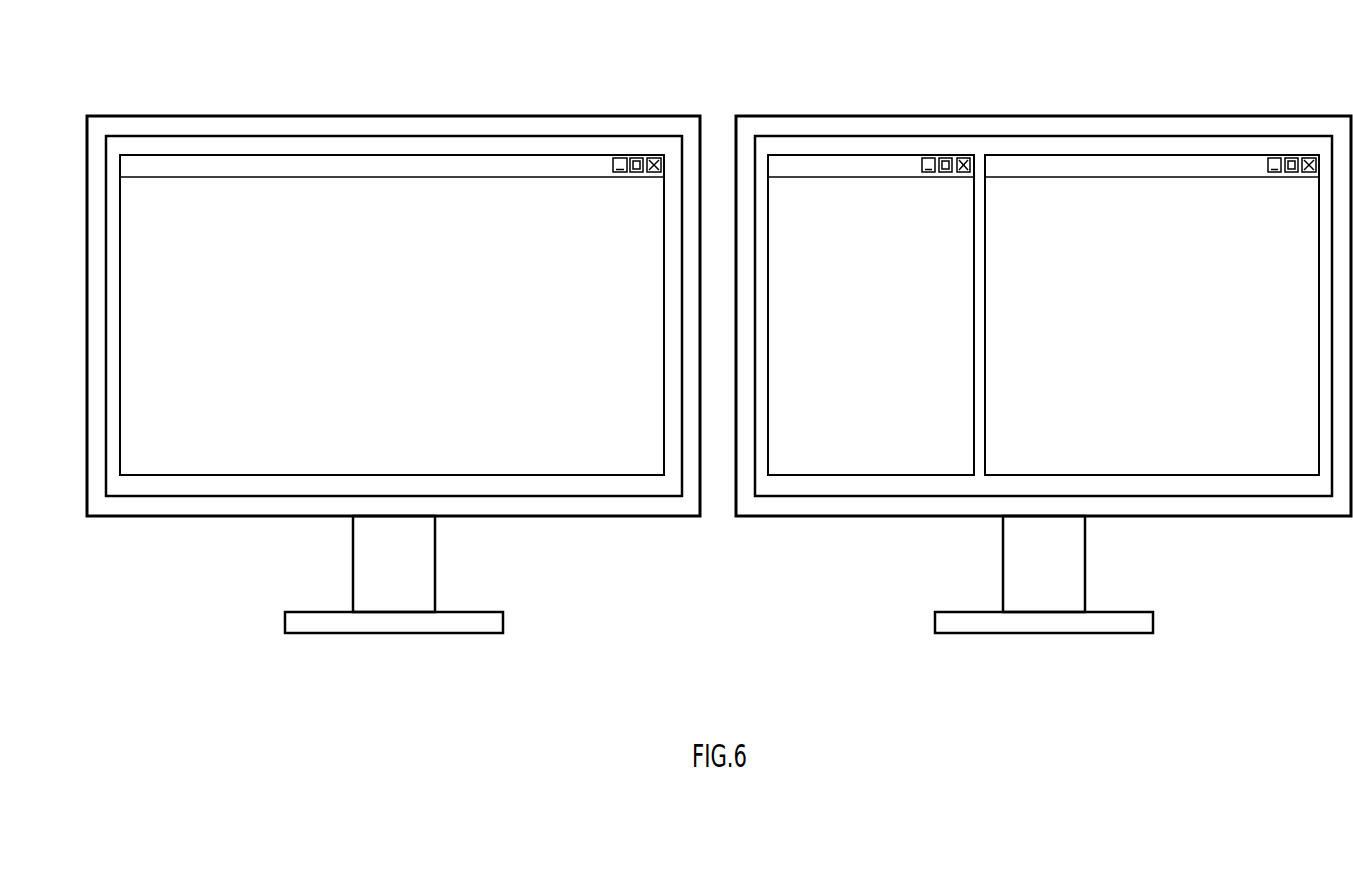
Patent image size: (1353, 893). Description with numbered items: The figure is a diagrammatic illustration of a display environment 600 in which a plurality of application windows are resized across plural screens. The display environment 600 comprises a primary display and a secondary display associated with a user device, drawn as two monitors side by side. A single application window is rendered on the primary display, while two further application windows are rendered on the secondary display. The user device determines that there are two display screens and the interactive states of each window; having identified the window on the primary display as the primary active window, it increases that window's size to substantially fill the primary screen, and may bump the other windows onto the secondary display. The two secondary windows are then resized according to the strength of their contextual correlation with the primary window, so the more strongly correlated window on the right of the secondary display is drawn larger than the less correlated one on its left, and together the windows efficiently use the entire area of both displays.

The display environment 600 is at (215, 70).